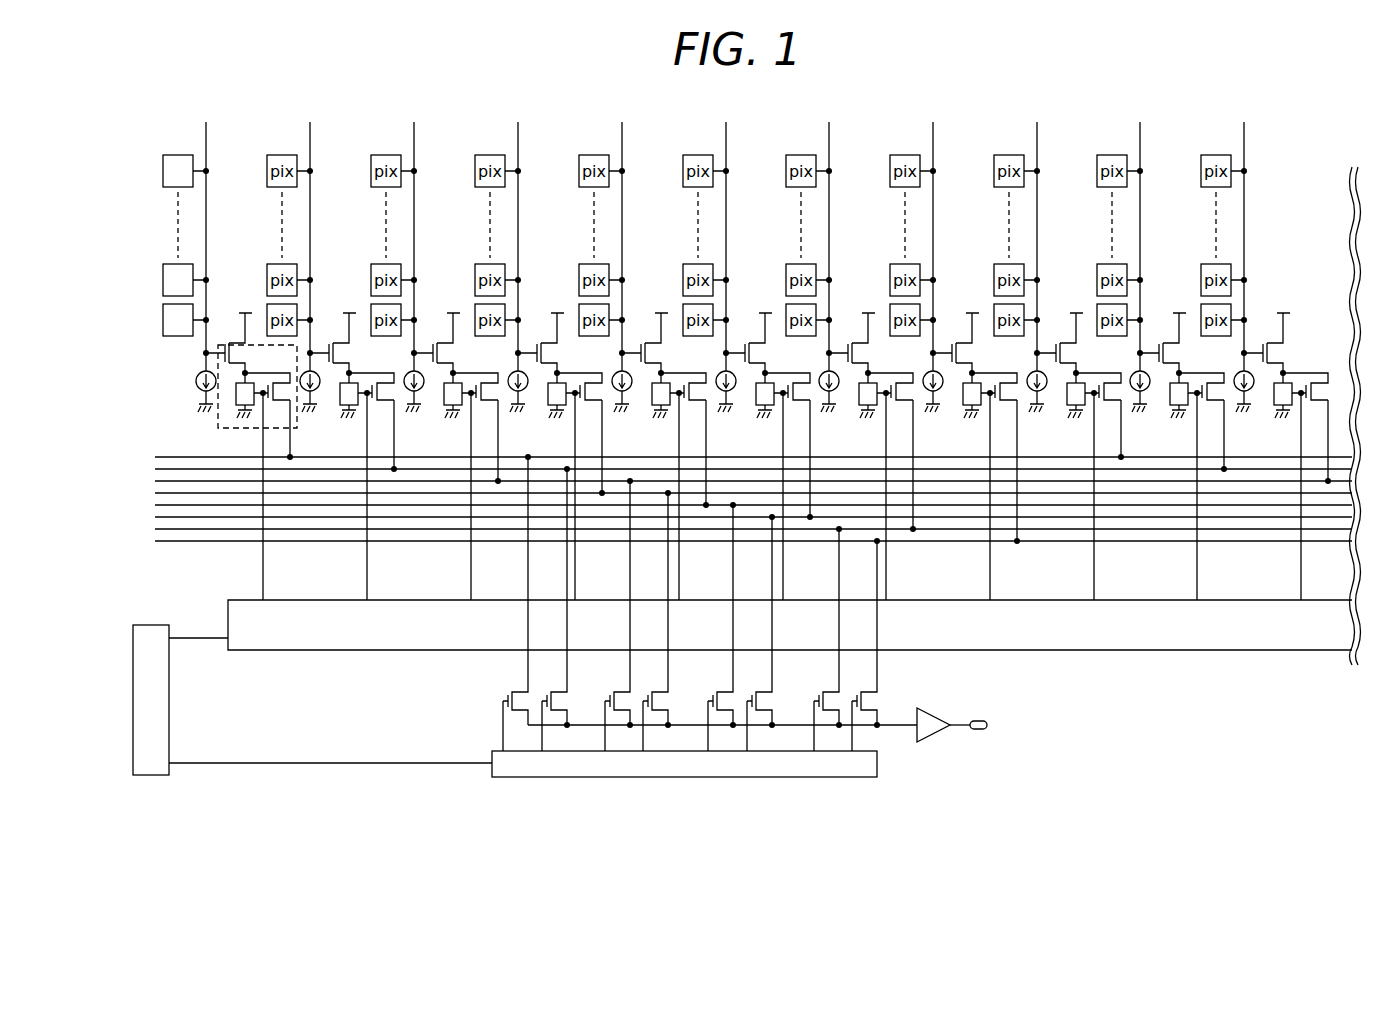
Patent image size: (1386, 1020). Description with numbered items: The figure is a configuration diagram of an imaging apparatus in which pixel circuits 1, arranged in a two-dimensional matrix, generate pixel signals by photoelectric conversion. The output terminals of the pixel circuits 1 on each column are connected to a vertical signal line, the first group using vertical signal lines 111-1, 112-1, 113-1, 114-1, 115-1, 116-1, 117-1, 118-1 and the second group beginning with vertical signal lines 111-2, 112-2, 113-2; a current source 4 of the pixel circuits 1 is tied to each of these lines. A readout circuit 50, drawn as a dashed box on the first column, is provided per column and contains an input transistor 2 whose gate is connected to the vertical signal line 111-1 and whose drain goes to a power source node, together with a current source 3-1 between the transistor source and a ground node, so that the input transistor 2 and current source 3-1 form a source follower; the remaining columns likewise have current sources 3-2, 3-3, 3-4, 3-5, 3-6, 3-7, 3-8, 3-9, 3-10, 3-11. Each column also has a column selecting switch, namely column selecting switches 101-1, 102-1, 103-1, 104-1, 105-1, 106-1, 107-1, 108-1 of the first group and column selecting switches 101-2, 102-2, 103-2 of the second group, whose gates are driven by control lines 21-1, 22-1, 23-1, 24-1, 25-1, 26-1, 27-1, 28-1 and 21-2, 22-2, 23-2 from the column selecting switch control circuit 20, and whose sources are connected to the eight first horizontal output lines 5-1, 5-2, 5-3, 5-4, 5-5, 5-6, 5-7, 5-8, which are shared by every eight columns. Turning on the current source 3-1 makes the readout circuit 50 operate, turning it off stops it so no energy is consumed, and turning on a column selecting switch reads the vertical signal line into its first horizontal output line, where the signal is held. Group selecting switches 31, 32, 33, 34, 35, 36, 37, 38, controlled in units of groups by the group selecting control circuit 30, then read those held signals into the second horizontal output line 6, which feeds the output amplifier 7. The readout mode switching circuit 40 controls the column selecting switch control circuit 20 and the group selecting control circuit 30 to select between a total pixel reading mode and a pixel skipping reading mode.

The pixel circuit 1 is at (182, 154).
The input transistor 2 is at (224, 343).
The current source 4 is at (196, 381).
The readout circuit 50 is at (218, 363).
The current source 3-1 is at (264, 381).
The current source 3-2 is at (368, 381).
The current source 3-3 is at (472, 381).
The current source 3-4 is at (576, 381).
The current source 3-5 is at (680, 381).
The current source 3-6 is at (784, 381).
The current source 3-7 is at (887, 381).
The current source 3-8 is at (991, 381).
The current source 3-9 is at (1095, 381).
The current source 3-10 is at (1198, 381).
The current source 3-11 is at (1296, 382).
The column selecting switch 101-1 is at (280, 401).
The column selecting switch 102-1 is at (384, 401).
The column selecting switch 103-1 is at (488, 401).
The column selecting switch 104-1 is at (592, 401).
The column selecting switch 105-1 is at (696, 401).
The column selecting switch 106-1 is at (800, 401).
The column selecting switch 107-1 is at (903, 401).
The column selecting switch 108-1 is at (1007, 401).
The column selecting switch 101-2 is at (1111, 401).
The column selecting switch 102-2 is at (1214, 401).
The column selecting switch 103-2 is at (1317, 372).
The first horizontal output line 5-1 is at (158, 456).
The first horizontal output line 5-2 is at (158, 469).
The first horizontal output line 5-3 is at (158, 481).
The first horizontal output line 5-4 is at (158, 493).
The first horizontal output line 5-5 is at (158, 505).
The first horizontal output line 5-6 is at (158, 517).
The first horizontal output line 5-7 is at (158, 529).
The first horizontal output line 5-8 is at (157, 541).
The vertical signal line 111-1 is at (208, 131).
The vertical signal line 112-1 is at (312, 131).
The vertical signal line 113-1 is at (416, 131).
The vertical signal line 114-1 is at (520, 131).
The vertical signal line 115-1 is at (624, 131).
The vertical signal line 116-1 is at (728, 131).
The vertical signal line 117-1 is at (831, 131).
The vertical signal line 118-1 is at (935, 131).
The vertical signal line 111-2 is at (1039, 131).
The vertical signal line 112-2 is at (1142, 131).
The vertical signal line 113-2 is at (1246, 131).
The control line 21-1 is at (264, 577).
The control line 22-1 is at (367, 577).
The control line 23-1 is at (471, 577).
The control line 24-1 is at (577, 565).
The control line 25-1 is at (681, 565).
The control line 26-1 is at (785, 565).
The control line 27-1 is at (888, 577).
The control line 28-1 is at (992, 588).
The control line 21-2 is at (1093, 562).
The control line 22-2 is at (1196, 577).
The control line 23-2 is at (1298, 577).
The column selecting switch control circuit 20 is at (228, 618).
The readout mode switching circuit 40 is at (169, 695).
The group selecting control circuit 30 is at (492, 752).
The group selecting switch 31 is at (506, 691).
The group selecting switch 32 is at (545, 691).
The group selecting switch 33 is at (608, 691).
The group selecting switch 34 is at (646, 691).
The group selecting switch 35 is at (711, 691).
The group selecting switch 36 is at (750, 691).
The group selecting switch 37 is at (817, 691).
The group selecting switch 38 is at (855, 691).
The second horizontal output line 6 is at (897, 729).
The output amplifier 7 is at (937, 736).